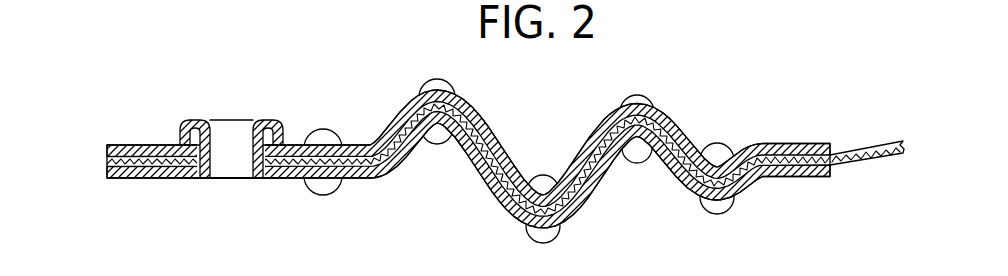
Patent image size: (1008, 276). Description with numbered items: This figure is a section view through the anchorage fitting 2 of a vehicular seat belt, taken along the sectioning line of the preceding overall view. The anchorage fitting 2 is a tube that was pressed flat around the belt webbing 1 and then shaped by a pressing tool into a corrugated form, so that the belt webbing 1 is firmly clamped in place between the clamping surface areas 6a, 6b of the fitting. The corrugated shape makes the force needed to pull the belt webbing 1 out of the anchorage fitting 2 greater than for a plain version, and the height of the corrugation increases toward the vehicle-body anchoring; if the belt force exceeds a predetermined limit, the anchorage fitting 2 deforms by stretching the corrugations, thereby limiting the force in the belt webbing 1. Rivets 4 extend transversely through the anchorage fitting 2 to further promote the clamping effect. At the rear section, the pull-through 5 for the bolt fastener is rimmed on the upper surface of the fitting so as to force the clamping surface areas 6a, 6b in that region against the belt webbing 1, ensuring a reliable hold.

The belt webbing 1 is at (853, 164).
The anchorage fitting 2 is at (505, 137).
The rivets 4 is at (317, 138).
The pull-through 5 is at (247, 142).
The clamping surface area 6a is at (498, 141).
The clamping surface area 6b is at (477, 172).